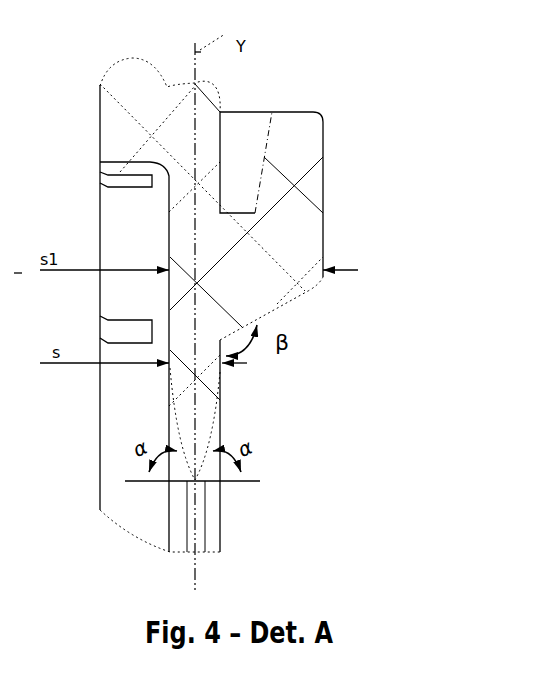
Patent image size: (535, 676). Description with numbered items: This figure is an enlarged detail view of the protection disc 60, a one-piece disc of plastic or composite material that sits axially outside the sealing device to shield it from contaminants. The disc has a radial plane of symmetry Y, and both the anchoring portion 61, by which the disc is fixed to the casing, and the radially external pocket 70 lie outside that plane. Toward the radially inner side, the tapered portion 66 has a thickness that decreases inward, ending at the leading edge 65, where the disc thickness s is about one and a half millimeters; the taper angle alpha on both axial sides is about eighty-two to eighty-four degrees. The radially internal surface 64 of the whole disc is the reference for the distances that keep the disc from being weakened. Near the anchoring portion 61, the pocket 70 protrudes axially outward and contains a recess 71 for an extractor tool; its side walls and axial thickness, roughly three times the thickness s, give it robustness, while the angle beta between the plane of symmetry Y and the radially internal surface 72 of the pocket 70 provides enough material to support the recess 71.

The protection disc 60 is at (400, 128).
The anchoring portion 61 is at (135, 82).
The radially internal surface 64 is at (197, 485).
The leading edge 65 is at (222, 378).
The tapered portion 66 is at (192, 430).
The pocket 70 is at (307, 218).
The recess 71 is at (248, 138).
The chamfer 72 is at (298, 304).